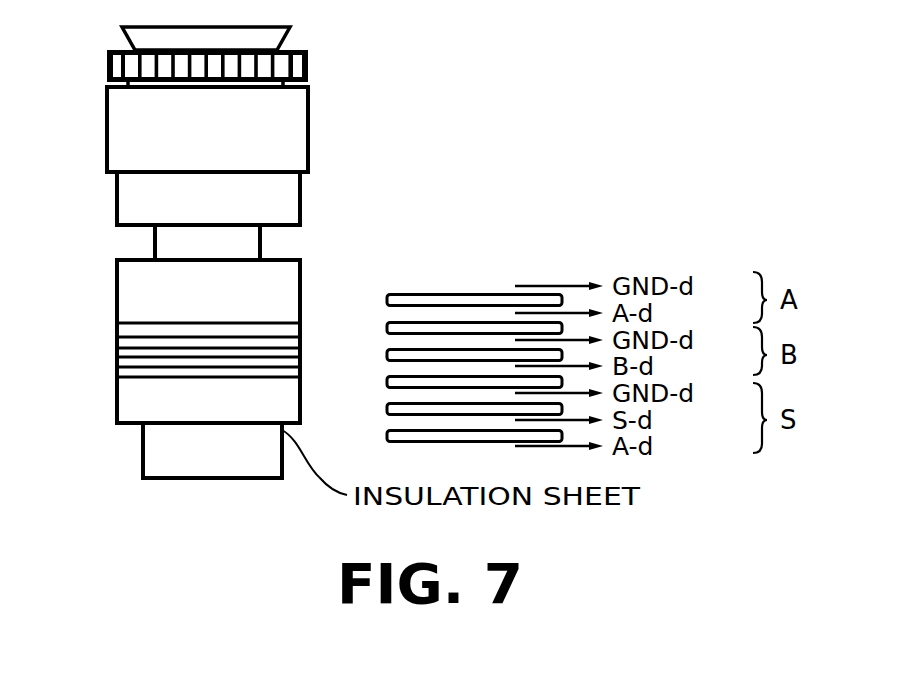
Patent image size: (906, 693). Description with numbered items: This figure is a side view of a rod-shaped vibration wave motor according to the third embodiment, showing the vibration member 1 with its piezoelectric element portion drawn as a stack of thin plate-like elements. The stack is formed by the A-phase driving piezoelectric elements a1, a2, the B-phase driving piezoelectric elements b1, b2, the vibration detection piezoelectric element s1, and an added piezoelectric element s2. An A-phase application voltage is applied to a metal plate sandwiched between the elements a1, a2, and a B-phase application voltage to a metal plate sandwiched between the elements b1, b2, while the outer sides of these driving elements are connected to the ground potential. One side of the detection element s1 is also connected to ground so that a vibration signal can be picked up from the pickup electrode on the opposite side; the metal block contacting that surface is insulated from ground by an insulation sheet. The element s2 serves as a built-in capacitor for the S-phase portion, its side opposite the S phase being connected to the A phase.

The vibration member 1 is at (82, 172).
The A-phase driving piezoelectric element a1 is at (308, 322).
The A-phase driving piezoelectric element a2 is at (453, 328).
The B-phase driving piezoelectric element b1 is at (453, 355).
The B-phase driving piezoelectric element b2 is at (453, 382).
The vibration detection piezoelectric element s1 is at (453, 409).
The piezoelectric element s2 is at (305, 380).